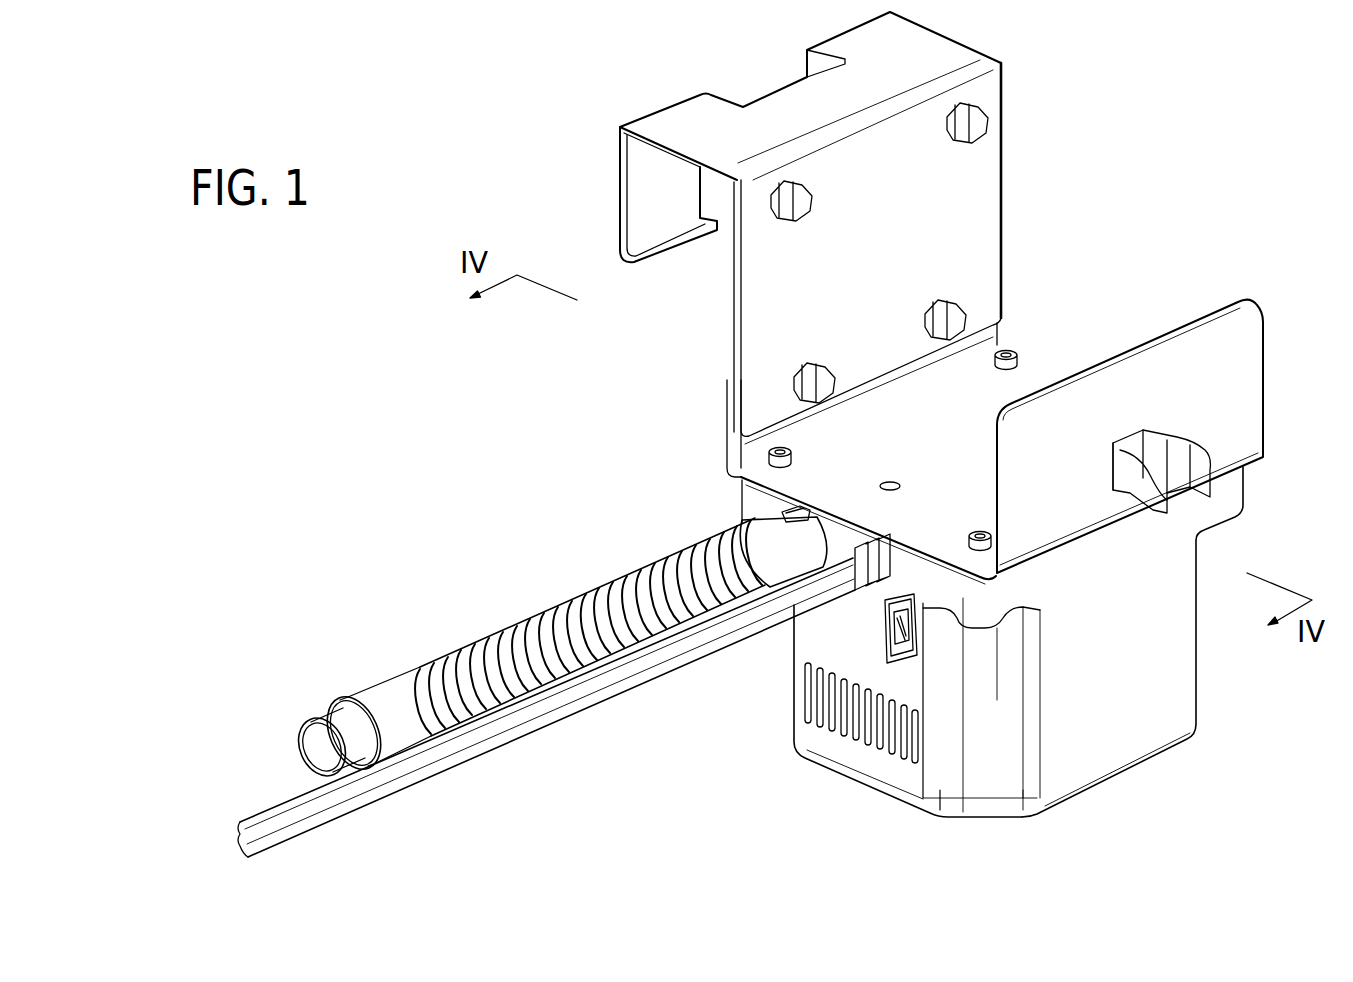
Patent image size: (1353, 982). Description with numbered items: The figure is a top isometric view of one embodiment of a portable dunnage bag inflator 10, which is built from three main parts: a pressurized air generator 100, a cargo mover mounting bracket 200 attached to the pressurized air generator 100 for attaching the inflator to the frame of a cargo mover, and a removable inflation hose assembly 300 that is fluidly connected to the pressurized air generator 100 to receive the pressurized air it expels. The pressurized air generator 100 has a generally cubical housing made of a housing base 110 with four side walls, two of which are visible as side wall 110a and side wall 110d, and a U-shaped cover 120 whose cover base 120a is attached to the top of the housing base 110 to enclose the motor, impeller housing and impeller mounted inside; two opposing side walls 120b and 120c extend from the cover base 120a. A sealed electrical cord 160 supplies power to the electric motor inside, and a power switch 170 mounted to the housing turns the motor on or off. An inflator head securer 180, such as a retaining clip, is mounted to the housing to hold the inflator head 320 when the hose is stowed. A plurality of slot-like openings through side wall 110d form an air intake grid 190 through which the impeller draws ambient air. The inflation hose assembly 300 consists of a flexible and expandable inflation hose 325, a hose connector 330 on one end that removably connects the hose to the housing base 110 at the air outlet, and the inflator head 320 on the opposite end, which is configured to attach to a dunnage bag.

The portable dunnage bag inflator 10 is at (460, 145).
The pressurized air generator 100 is at (1185, 794).
The housing base 110 is at (1204, 742).
The side wall 110a is at (1147, 659).
The side wall 110d is at (867, 644).
The U-shaped cover 120 is at (1268, 386).
The cover base 120a is at (940, 447).
The side wall of cover 120b is at (993, 340).
The side wall of cover 120c is at (1085, 467).
The sealed electrical cord 160 is at (382, 797).
The power switch 170 is at (917, 640).
The inflator head securer 180 is at (1232, 487).
The air intake grid 190 is at (855, 745).
The cargo mover mounting bracket 200 is at (688, 125).
The inflation hose assembly 300 is at (313, 603).
The inflator head 320 is at (325, 710).
The inflation hose 325 is at (479, 640).
The hose connector 330 is at (781, 512).